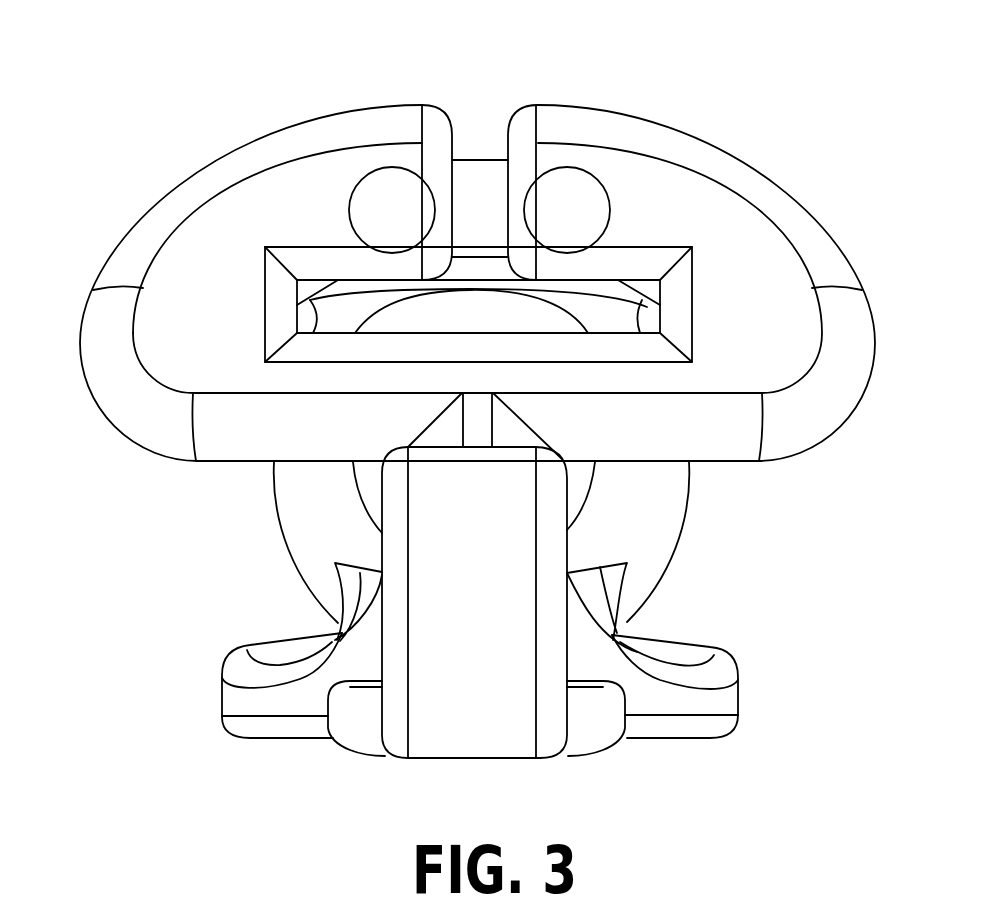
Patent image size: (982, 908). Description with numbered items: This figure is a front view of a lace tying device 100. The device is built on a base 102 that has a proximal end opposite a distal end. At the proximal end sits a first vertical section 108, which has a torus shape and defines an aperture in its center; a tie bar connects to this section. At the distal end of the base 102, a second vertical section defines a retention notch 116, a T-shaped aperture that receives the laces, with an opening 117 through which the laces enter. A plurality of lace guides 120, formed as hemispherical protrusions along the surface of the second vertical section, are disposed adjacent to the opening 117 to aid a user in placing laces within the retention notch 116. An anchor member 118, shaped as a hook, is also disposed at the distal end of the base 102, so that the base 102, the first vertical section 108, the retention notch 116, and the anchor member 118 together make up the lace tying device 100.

The lace tying device 100 is at (136, 72).
The base 102 is at (697, 702).
The first vertical section 108 is at (648, 497).
The retention notch 116 is at (727, 192).
The opening 117 is at (505, 133).
The anchor member 118 is at (437, 615).
The lace guides 120 is at (568, 212).